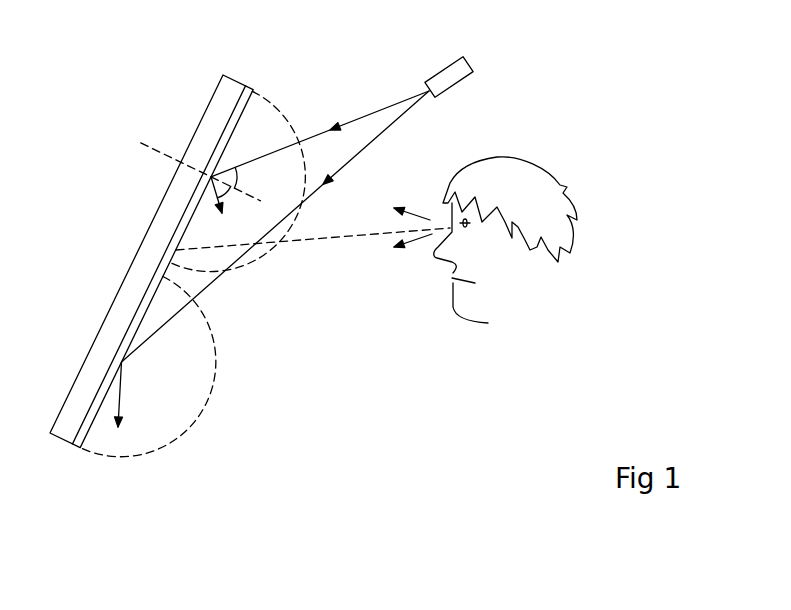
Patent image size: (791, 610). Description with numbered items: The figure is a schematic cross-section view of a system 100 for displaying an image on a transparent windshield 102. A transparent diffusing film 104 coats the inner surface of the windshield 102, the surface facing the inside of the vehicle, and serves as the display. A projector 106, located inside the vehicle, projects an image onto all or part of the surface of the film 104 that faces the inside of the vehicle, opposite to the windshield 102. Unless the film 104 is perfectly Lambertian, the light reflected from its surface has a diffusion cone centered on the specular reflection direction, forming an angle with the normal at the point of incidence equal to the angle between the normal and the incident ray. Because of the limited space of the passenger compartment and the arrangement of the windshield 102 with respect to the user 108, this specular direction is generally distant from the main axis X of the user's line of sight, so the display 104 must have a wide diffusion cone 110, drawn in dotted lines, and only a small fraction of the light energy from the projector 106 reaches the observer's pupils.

The system 100 is at (375, 14).
The transparent windshield 102 is at (215, 117).
The transparent diffusing film 104 is at (80, 442).
The projector 106 is at (472, 62).
The user 108 is at (550, 170).
The diffusion cone 110 is at (276, 103).
The main axis of the user's line of sight X is at (333, 238).